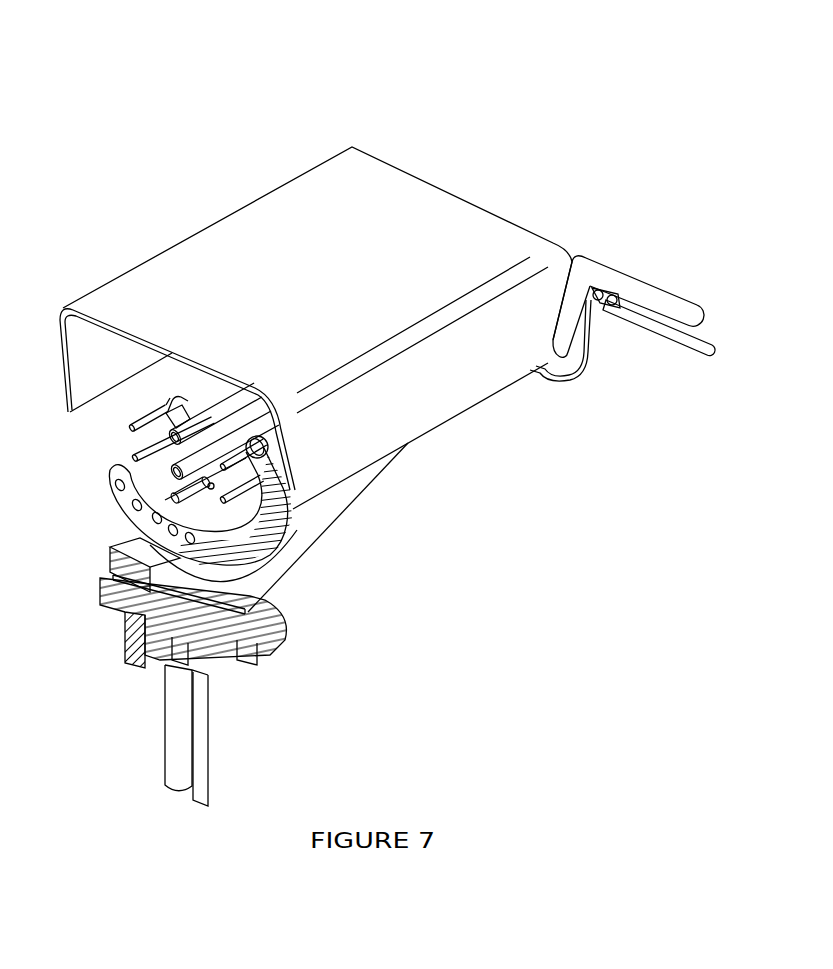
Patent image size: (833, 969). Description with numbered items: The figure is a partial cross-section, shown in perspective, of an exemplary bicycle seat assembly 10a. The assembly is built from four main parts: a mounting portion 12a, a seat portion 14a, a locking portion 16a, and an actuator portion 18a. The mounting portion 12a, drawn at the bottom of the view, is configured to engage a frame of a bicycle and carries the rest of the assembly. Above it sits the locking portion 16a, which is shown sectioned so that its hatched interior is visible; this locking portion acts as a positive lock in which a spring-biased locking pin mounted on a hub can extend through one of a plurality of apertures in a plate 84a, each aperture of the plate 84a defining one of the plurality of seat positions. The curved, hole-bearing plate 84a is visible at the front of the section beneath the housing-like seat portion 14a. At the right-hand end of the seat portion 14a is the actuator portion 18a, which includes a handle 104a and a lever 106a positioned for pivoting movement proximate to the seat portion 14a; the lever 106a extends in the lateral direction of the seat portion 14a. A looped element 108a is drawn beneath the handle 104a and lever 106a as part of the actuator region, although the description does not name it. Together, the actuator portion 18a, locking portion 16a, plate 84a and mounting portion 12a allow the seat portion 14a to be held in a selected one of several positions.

The bicycle seat assembly 10a is at (435, 418).
The seat portion 14a is at (533, 180).
The actuator portion 18a is at (670, 295).
The handle 104a is at (610, 283).
The lever 106a is at (653, 333).
The hook 108a is at (589, 373).
The plate 84a is at (262, 540).
The locking portion 16a is at (435, 585).
The mounting portion 12a is at (532, 753).